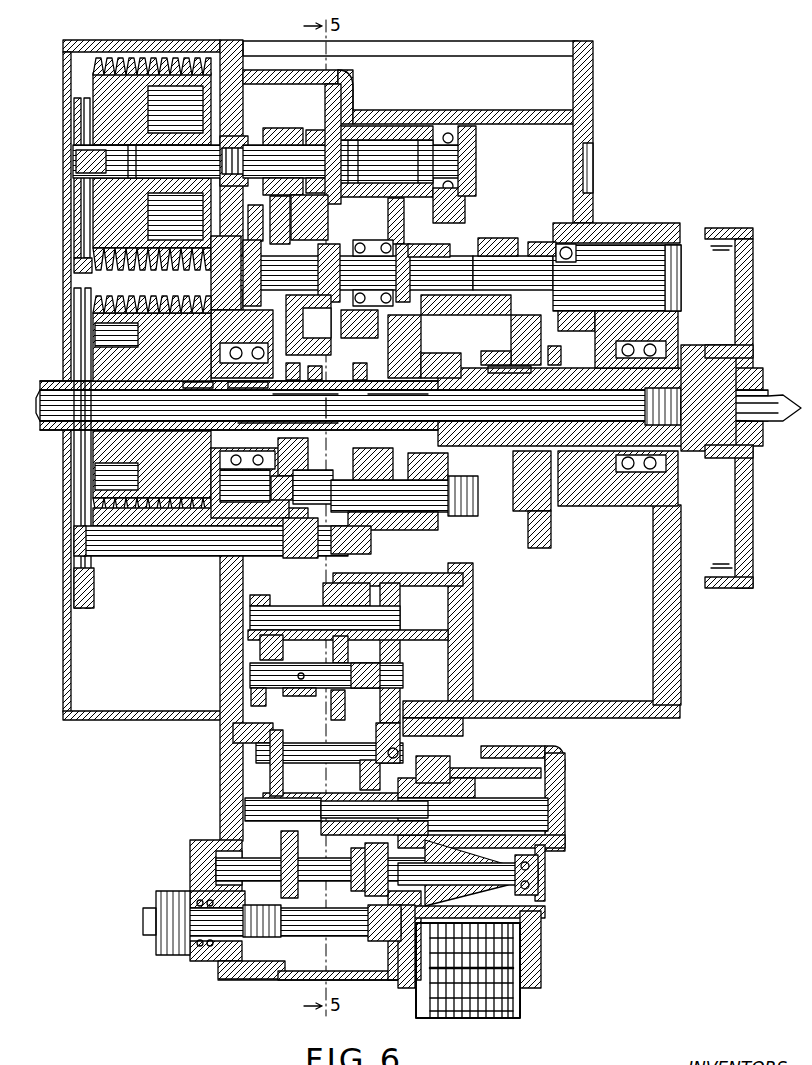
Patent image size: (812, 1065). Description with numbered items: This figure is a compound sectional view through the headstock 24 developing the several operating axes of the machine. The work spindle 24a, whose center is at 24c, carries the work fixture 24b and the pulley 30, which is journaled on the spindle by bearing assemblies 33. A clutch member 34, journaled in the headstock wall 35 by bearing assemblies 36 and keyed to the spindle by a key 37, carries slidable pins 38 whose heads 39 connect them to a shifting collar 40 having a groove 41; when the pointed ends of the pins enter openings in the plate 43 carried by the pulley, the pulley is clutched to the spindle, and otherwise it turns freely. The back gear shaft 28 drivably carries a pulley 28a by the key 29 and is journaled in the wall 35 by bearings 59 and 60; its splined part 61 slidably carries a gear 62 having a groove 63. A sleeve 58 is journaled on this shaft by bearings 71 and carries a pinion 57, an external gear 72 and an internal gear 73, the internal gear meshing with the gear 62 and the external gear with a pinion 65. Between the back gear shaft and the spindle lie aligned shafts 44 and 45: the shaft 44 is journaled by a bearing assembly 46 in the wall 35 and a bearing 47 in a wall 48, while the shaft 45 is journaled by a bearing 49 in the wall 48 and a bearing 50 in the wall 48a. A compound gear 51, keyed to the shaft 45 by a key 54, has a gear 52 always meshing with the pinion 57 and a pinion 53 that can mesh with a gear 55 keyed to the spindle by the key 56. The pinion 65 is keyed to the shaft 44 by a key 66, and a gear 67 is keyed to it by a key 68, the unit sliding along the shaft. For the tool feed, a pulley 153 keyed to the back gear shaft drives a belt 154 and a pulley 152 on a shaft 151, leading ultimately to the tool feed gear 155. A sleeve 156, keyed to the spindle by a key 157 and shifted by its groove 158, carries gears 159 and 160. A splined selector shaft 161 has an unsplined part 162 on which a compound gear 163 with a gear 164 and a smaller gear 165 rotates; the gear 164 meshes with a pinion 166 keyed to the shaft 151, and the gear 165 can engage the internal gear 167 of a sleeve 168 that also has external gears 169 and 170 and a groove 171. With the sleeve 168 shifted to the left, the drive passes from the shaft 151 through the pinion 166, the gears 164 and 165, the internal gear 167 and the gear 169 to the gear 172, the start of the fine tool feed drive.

The headstock 24 is at (586, 86).
The spindle 24a is at (570, 443).
The work fixture 24b is at (736, 581).
The center of the work spindle 24c is at (770, 385).
The back gear shaft 28 is at (140, 150).
The pulley 28a is at (85, 70).
The key 29 is at (172, 125).
The pulley 30 is at (130, 321).
The bearing assemblies 33 is at (130, 458).
The clutch member 34 is at (215, 376).
The wall 35 is at (245, 302).
The bearing assemblies 36 is at (250, 483).
The key 37 is at (245, 377).
The pins 38 is at (287, 410).
The head 39 is at (305, 406).
The shifting collar 40 is at (288, 355).
The groove 41 is at (310, 358).
The plate 43 is at (195, 376).
The shaft 44 is at (348, 273).
The shaft 45 is at (577, 278).
The bearing assembly 46 is at (205, 266).
The bearing 47 is at (373, 263).
The wall 48 is at (359, 319).
The wall 48a is at (645, 592).
The bearing 49 is at (388, 258).
The bearing 50 is at (570, 245).
The compound gear 51 is at (430, 236).
The gear 52 is at (405, 208).
The pinion 53 is at (485, 230).
The key 54 is at (522, 244).
The gear 55 is at (535, 498).
The key 56 is at (522, 365).
The pinion 57 is at (395, 118).
The sleeve 58 is at (365, 138).
The bearing 59 is at (200, 201).
The bearing 60 is at (458, 196).
The splined part 61 is at (234, 161).
The gear 62 is at (305, 120).
The groove 63 is at (275, 120).
The pinion 65 is at (308, 325).
The key 66 is at (258, 288).
The gear 67 is at (268, 214).
The key 68 is at (320, 273).
The bearings 71 is at (380, 166).
The external gear 72 is at (345, 76).
The internal gear 73 is at (330, 194).
The shaft 151 is at (211, 532).
The pulley 152 is at (85, 598).
The pulley 153 is at (66, 206).
The belt 154 is at (72, 316).
The tool feed gear 155 is at (170, 882).
The sleeve 156 is at (455, 406).
The key 157 is at (400, 368).
The groove 158 is at (395, 343).
The gear 159 is at (352, 355).
The gear 160 is at (445, 345).
The selector shaft 161 is at (470, 490).
The part 162 is at (302, 487).
The compound gear 163 is at (292, 457).
The gear 164 is at (356, 390).
The gear 165 is at (344, 408).
The pinion 166 is at (305, 550).
The internal gear 167 is at (351, 540).
The sleeve 168 is at (390, 508).
The external gear 169 is at (394, 406).
The external gear 170 is at (415, 504).
The groove 171 is at (368, 504).
The gear 172 is at (318, 578).